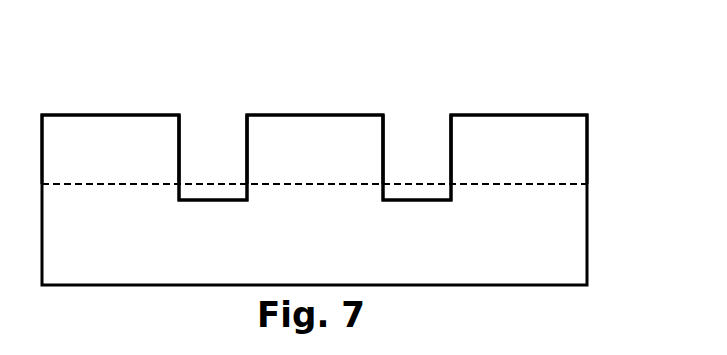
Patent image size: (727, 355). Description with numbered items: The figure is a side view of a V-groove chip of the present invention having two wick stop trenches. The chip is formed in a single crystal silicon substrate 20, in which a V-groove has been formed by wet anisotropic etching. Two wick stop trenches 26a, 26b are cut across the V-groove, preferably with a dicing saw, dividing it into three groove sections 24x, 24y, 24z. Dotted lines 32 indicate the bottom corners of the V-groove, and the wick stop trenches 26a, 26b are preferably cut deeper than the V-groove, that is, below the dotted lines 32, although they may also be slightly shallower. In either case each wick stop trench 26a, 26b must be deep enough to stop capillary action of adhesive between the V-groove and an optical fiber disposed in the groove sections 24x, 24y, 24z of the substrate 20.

The substrate 20 is at (314, 200).
The groove section 24x is at (108, 152).
The groove section 24y is at (313, 151).
The groove section 24z is at (517, 152).
The wick stop trench 26a is at (213, 157).
The wick stop trench 26b is at (417, 157).
The dotted lines 32 is at (128, 186).